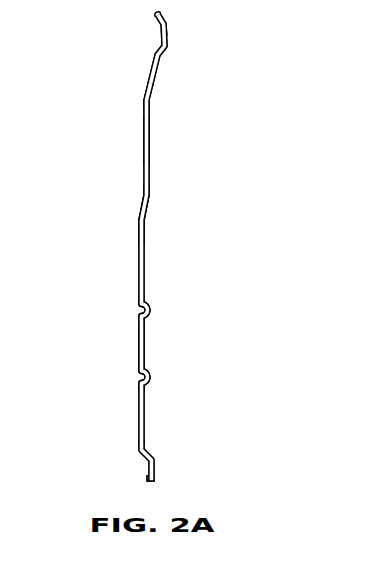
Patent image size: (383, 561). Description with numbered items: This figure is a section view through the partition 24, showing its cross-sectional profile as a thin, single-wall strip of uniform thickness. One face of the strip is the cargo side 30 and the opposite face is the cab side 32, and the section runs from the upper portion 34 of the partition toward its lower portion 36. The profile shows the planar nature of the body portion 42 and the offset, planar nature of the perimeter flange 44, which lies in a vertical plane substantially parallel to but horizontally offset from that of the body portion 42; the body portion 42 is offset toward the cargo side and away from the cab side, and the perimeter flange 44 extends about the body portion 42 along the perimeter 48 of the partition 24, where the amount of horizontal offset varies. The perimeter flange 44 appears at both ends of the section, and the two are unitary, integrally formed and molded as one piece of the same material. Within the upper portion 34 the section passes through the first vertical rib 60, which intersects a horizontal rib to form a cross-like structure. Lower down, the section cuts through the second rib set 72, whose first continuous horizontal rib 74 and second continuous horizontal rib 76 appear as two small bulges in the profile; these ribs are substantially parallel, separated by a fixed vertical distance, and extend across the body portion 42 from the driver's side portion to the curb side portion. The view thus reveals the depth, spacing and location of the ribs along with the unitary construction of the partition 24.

The partition 24 is at (144, 98).
The cargo side 30 is at (119, 152).
The cab side 32 is at (165, 92).
The upper portion 34 is at (165, 128).
The lower portion 36 is at (161, 343).
The body portion 42 is at (127, 233).
The perimeter flange 44 is at (167, 34).
The perimeter 48 is at (156, 16).
The first vertical rib 60 is at (149, 143).
The second rib set 72 is at (109, 341).
The first continuous horizontal rib 74 is at (149, 311).
The second continuous horizontal rib 76 is at (149, 378).